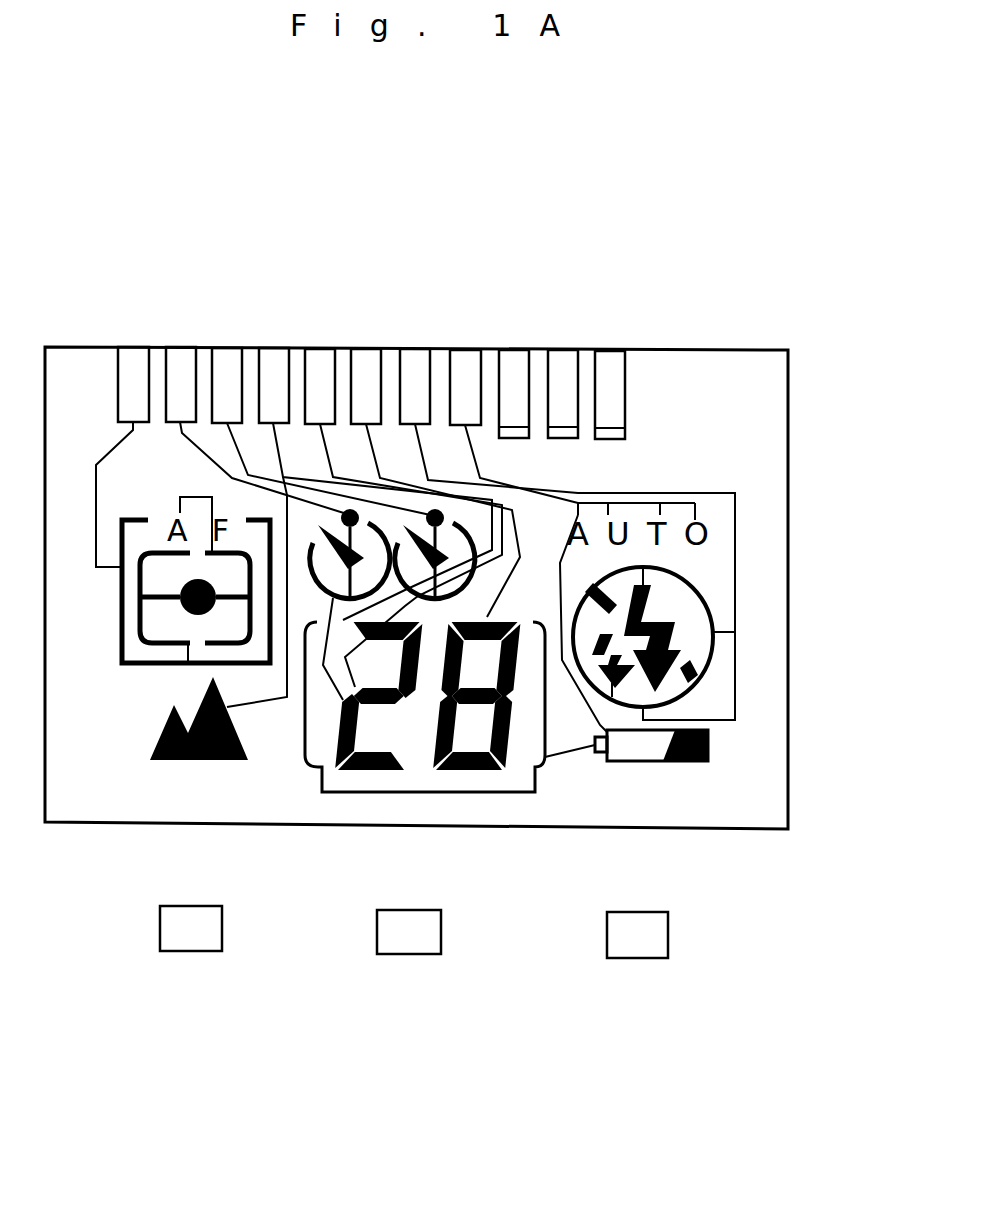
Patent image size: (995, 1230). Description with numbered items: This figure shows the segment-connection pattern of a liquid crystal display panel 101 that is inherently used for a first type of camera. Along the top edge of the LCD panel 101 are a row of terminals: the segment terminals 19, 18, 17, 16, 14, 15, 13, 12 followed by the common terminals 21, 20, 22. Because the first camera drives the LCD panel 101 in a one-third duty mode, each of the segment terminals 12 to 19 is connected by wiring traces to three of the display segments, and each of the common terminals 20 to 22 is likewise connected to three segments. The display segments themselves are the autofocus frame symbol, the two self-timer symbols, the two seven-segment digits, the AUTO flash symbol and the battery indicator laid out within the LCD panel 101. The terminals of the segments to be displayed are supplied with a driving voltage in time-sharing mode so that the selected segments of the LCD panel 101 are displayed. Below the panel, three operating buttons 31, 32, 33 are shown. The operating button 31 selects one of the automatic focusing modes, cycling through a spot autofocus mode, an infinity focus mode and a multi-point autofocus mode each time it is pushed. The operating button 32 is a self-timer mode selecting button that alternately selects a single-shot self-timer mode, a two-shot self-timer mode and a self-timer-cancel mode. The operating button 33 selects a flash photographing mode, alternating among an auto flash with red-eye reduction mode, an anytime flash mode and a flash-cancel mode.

The LCD panel 101 is at (115, 828).
The segment terminal 19 is at (126, 347).
The segment terminal 18 is at (172, 348).
The segment terminal 17 is at (216, 350).
The segment terminal 16 is at (262, 350).
The segment terminal 14 is at (312, 350).
The segment terminal 15 is at (358, 350).
The segment terminal 13 is at (405, 350).
The segment terminal 12 is at (455, 352).
The common terminal 21 is at (503, 352).
The common terminal 20 is at (552, 352).
The common terminal 22 is at (600, 352).
The operating button 31 is at (222, 930).
The operating button 32 is at (436, 932).
The operating button 33 is at (664, 934).